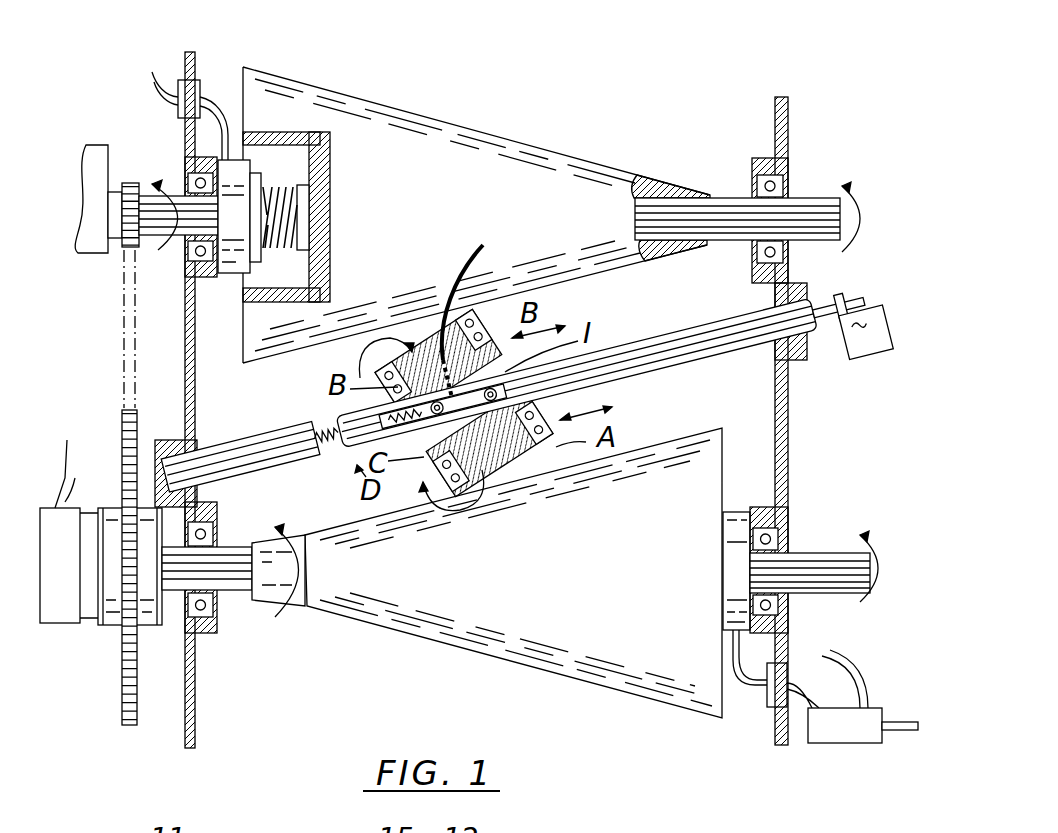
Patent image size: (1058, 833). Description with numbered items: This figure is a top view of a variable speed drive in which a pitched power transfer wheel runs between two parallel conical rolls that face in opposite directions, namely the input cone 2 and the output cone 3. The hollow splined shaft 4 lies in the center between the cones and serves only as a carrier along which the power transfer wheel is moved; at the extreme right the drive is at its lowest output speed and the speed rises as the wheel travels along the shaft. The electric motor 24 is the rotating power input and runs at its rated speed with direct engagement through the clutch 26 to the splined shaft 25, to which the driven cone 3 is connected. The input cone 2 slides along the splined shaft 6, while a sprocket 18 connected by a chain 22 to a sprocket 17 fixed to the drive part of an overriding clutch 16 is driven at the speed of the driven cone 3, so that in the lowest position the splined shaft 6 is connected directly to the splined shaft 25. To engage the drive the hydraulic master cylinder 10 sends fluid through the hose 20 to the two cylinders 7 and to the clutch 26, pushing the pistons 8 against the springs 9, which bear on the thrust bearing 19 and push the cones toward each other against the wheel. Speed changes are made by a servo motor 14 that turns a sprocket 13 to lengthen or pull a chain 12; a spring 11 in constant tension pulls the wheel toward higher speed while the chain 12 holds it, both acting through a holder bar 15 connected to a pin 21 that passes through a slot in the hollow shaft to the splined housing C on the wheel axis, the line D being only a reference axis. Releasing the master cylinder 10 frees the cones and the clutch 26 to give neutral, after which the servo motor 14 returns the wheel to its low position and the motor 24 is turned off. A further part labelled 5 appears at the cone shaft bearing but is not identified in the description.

The input cone 2 is at (432, 137).
The output cone 3 is at (595, 630).
The hollow splined shaft 4 is at (717, 353).
The cone shaft 5 is at (798, 197).
The splined shaft 6 is at (800, 198).
The cylinder 7 is at (230, 183).
The piston 8 is at (256, 185).
The spring 9 is at (285, 190).
The hydraulic master cylinder 10 is at (870, 726).
The spring 11 is at (321, 448).
The chain 12 is at (828, 302).
The sprocket 13 is at (872, 290).
The servo motor 14 is at (878, 322).
The holder bar 15 is at (497, 440).
The overriding clutch 16 is at (115, 628).
The sprocket 17 is at (120, 713).
The sprocket 18 is at (123, 250).
The thrust bearing 19 is at (325, 180).
The hose 20 is at (152, 72).
The pin 21 is at (478, 310).
The chain 22 is at (120, 316).
The electric motor 24 is at (100, 145).
The splined shaft 25 is at (818, 552).
The clutch 26 is at (55, 627).